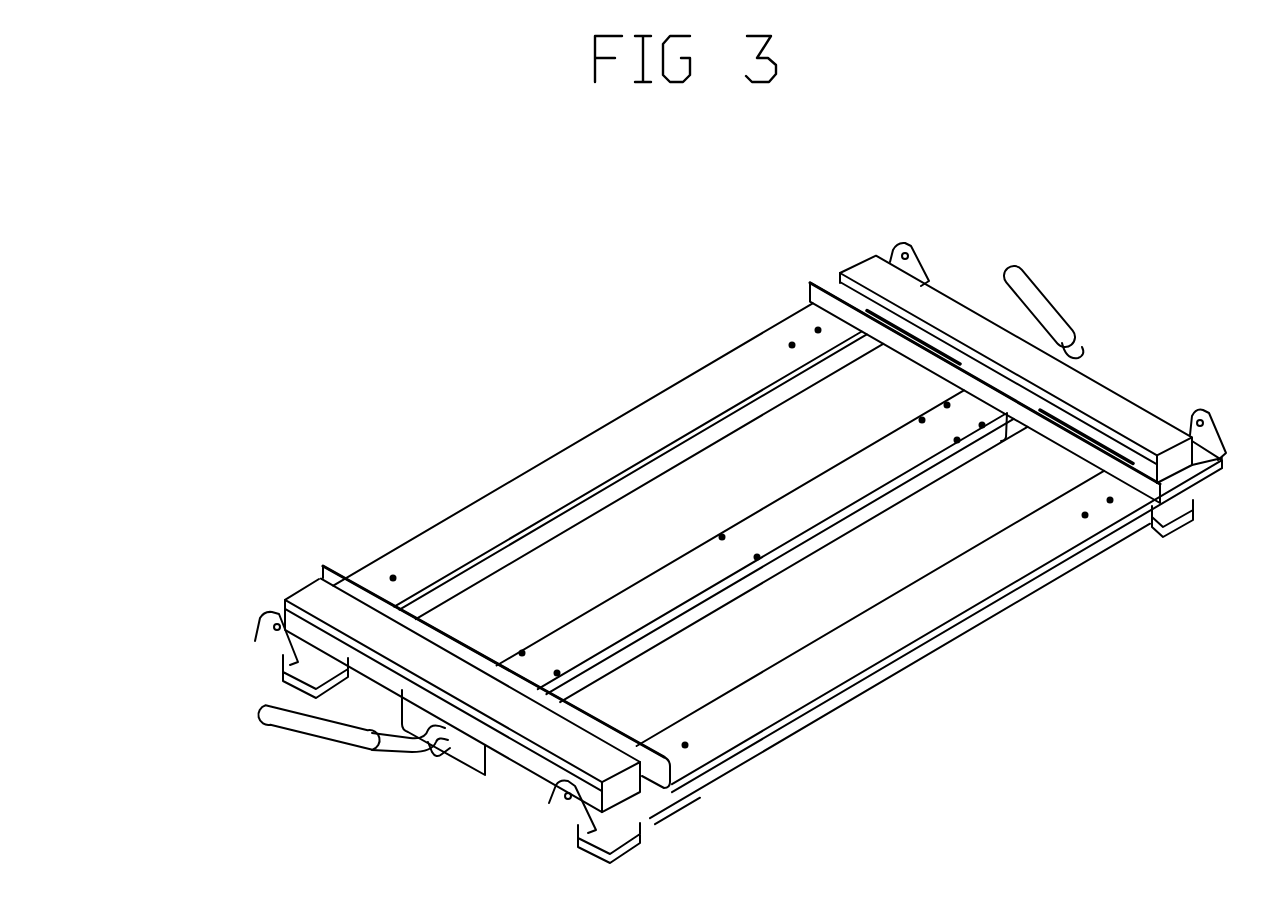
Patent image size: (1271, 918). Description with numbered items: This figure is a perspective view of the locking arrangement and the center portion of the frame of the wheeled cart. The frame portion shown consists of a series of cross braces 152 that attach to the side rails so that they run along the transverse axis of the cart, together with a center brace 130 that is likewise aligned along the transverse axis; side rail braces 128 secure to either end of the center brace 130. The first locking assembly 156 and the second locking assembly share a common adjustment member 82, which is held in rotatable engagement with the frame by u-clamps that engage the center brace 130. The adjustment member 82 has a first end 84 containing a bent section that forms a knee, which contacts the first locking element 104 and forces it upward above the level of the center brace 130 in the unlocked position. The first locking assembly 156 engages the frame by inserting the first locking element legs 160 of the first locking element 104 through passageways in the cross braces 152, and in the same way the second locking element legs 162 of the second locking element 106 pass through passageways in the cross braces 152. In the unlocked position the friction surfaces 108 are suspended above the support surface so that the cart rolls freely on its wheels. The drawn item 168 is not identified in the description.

The adjustment member 82 is at (1077, 206).
The first end 84 is at (431, 770).
The first locking element 104 is at (303, 598).
The second locking element 106 is at (871, 264).
The friction surfaces 108 is at (1163, 547).
The side rail braces 128 is at (808, 291).
The center brace 130 is at (760, 527).
The cross braces 152 is at (512, 337).
The first locking assembly 156 is at (277, 800).
The first locking element legs 160 is at (570, 840).
The second locking element legs 162 is at (707, 187).
The platform 168 is at (1138, 347).